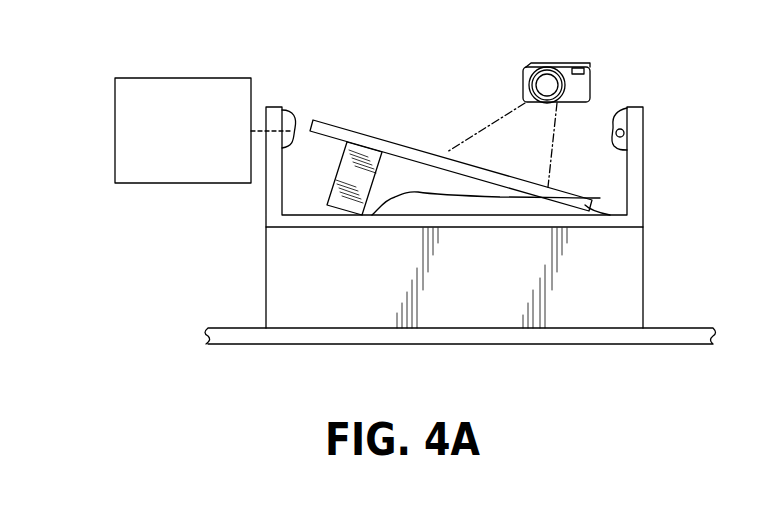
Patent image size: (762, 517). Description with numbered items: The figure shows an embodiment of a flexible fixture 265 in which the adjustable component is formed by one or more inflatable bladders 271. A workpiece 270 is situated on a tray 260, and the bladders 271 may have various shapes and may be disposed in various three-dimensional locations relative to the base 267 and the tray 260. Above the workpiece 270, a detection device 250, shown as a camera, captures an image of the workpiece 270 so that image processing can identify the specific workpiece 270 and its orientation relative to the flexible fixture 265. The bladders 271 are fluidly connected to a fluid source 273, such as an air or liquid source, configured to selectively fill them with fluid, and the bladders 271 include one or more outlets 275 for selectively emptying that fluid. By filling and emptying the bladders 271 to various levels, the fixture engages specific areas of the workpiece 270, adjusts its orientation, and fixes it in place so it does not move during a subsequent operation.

The detection device 250 is at (573, 63).
The tray 260 is at (645, 335).
The flexible fixture 265 is at (650, 272).
The base 267 is at (297, 283).
The workpiece 270 is at (334, 128).
The inflatable bladders 271 is at (290, 128).
The fluid source 273 is at (185, 184).
The outlets 275 is at (622, 112).